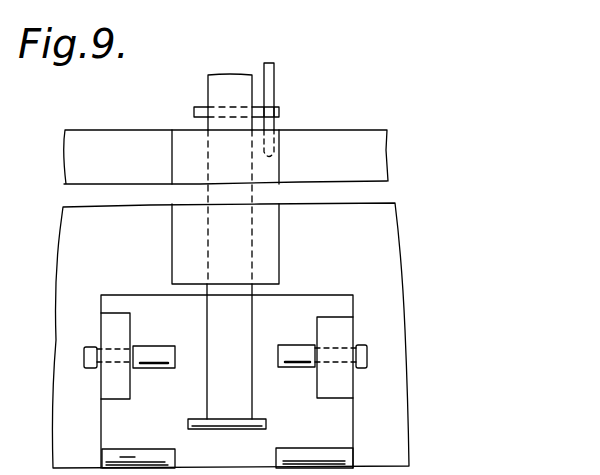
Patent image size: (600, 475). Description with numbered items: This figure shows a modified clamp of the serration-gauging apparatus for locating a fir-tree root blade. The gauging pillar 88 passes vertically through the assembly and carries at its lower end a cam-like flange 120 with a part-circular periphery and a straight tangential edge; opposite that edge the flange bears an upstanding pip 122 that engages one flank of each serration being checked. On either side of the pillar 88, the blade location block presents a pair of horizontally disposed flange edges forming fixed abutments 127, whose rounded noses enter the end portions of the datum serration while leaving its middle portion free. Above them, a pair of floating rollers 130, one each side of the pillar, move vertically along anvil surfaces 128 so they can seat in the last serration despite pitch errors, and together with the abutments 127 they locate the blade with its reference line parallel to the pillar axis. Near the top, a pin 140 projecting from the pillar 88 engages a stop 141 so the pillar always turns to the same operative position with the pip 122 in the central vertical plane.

The gauging pillar 88 is at (237, 327).
The cam-like projection or flange 120 is at (258, 420).
The upstanding pip 122 is at (210, 419).
The fixed abutments 127 is at (144, 446).
The anvil surfaces 128 is at (145, 311).
The floating rollers 130 is at (156, 348).
The pin 140 is at (205, 108).
The stop 141 is at (275, 86).